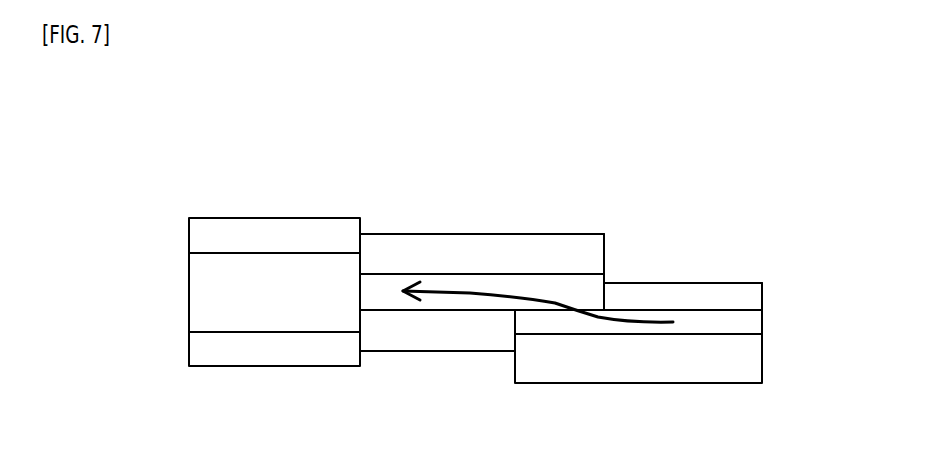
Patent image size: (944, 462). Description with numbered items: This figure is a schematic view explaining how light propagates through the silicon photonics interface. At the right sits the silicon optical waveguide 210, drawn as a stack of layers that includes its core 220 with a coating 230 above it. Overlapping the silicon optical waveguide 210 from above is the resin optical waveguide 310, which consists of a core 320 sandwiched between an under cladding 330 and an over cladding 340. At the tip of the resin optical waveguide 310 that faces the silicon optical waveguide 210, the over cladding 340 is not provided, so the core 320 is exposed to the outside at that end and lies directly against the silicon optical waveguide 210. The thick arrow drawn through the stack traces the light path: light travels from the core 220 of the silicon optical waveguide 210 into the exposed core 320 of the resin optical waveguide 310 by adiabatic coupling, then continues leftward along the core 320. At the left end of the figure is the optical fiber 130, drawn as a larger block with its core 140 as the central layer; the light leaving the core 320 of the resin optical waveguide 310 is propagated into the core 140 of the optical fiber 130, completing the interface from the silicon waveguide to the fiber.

The optical fiber 130 is at (273, 193).
The core 140 is at (203, 293).
The resin optical waveguide 310 is at (487, 217).
The core 320 is at (577, 292).
The under cladding 330 is at (563, 242).
The over cladding 340 is at (458, 342).
The silicon optical waveguide 210 is at (708, 397).
The core 220 is at (745, 323).
The coating 230 is at (722, 290).